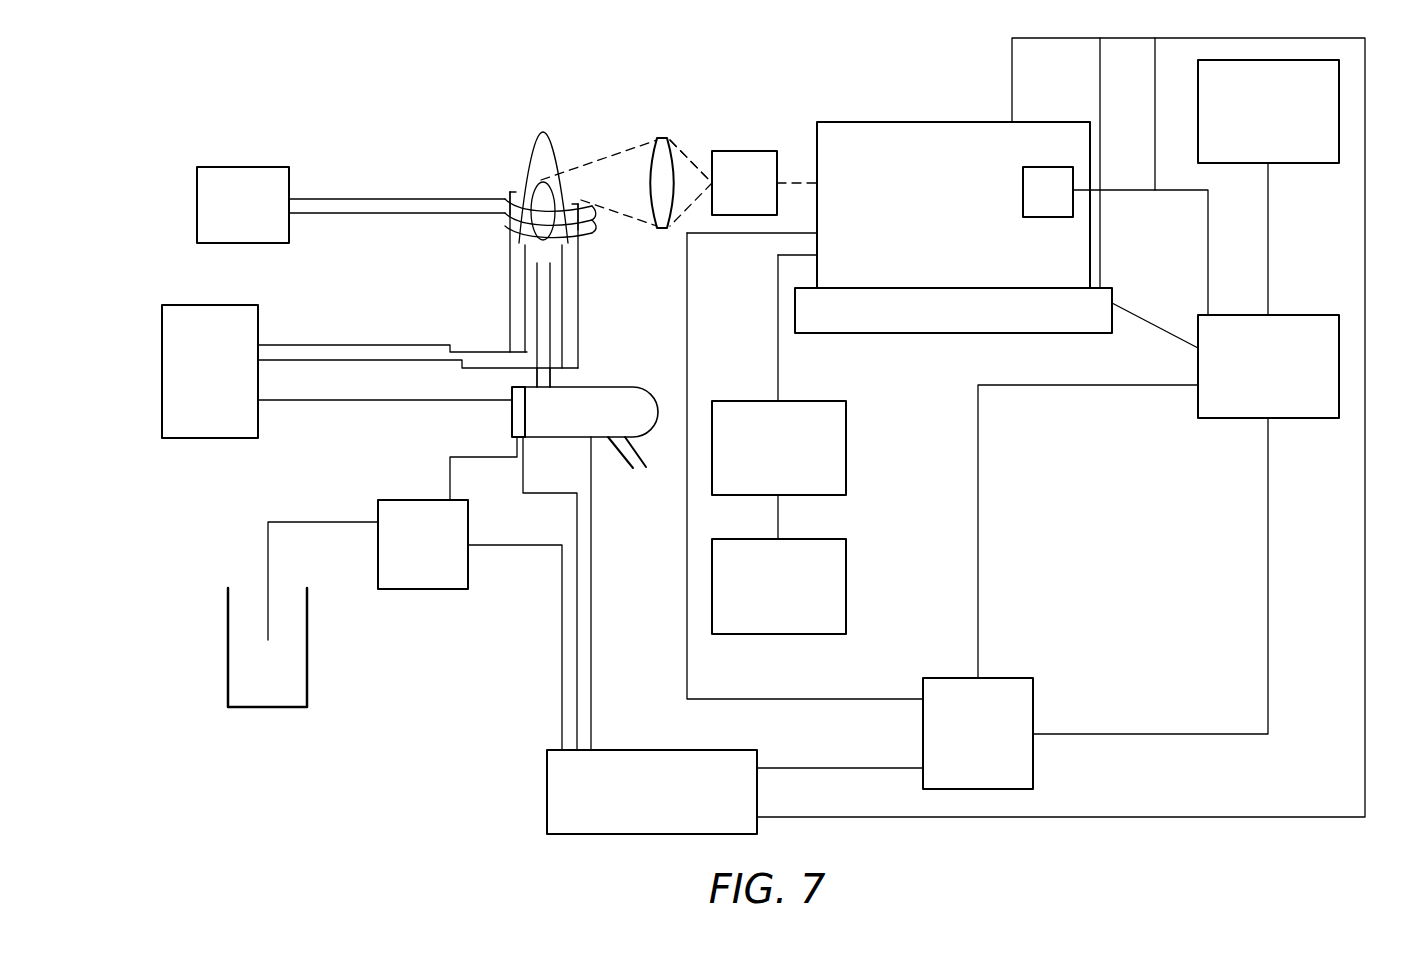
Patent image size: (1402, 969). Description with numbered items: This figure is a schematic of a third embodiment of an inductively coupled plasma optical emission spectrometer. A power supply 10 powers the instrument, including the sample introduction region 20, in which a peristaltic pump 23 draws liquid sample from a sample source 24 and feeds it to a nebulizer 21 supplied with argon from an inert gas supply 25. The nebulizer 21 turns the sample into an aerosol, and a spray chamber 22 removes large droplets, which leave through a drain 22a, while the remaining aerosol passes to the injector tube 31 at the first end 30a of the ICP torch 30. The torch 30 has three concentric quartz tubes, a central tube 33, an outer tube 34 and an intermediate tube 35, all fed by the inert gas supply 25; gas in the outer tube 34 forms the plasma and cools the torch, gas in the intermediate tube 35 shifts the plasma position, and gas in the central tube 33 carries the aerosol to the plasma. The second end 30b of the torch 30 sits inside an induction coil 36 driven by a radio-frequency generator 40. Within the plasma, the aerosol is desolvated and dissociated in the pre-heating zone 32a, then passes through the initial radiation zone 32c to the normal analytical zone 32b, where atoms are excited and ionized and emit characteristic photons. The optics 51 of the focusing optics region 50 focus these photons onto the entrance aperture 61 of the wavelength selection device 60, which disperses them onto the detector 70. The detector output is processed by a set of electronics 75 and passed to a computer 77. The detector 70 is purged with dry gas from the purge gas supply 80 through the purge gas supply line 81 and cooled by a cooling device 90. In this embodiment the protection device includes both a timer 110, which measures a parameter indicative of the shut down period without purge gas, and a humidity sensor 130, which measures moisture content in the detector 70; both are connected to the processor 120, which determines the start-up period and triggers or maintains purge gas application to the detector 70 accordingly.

The power supply 10 is at (547, 760).
The sample introduction region 20 is at (459, 608).
The nebulizer 21 is at (512, 418).
The spray chamber 22 is at (604, 440).
The drain 22a is at (646, 472).
The peristaltic pump 23 is at (400, 590).
The sample source 24 is at (286, 708).
The inert gas supply 25 is at (186, 440).
The ICP torch 30 is at (485, 259).
The first end 30a is at (508, 342).
The second end 30b is at (508, 195).
The injector tube 31 is at (537, 375).
The pre-heating zone 32a is at (582, 210).
The normal analytical zone 32b is at (547, 178).
The initial radiation zone 32c is at (556, 200).
The central tube 33 is at (552, 320).
The outer tube 34 is at (564, 289).
The intermediate tube 35 is at (580, 257).
The induction coil 36 is at (508, 208).
The radio-frequency generator 40 is at (215, 166).
The focusing optics region 50 is at (670, 240).
The optics 51 is at (662, 137).
The wavelength selection device 60 is at (752, 150).
The entrance aperture 61 is at (684, 150).
The detector 70 is at (835, 122).
The set of electronics 75 is at (847, 406).
The computer 77 is at (847, 547).
The purge gas supply 80 is at (1034, 688).
The purge gas supply line 81 is at (864, 699).
The cooling device 90 is at (940, 334).
The timer 110 is at (1313, 165).
The processor 120 is at (1315, 420).
The humidity sensor 130 is at (1022, 190).